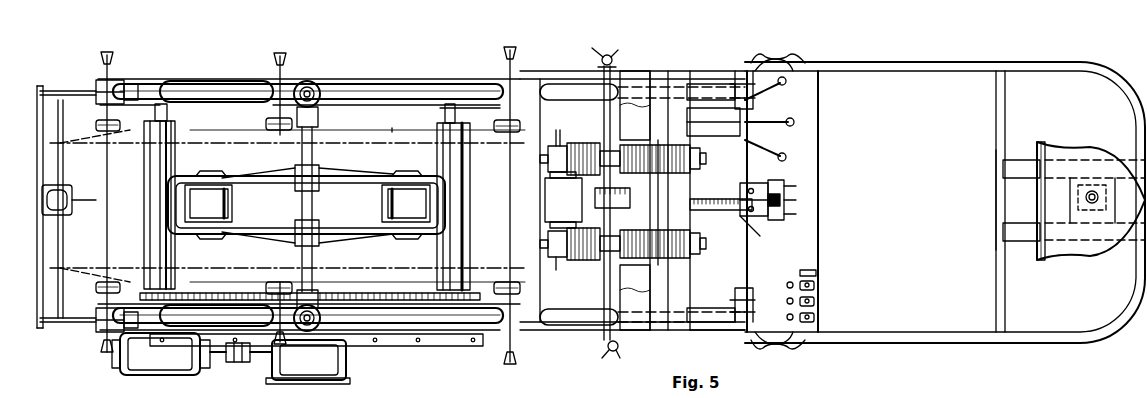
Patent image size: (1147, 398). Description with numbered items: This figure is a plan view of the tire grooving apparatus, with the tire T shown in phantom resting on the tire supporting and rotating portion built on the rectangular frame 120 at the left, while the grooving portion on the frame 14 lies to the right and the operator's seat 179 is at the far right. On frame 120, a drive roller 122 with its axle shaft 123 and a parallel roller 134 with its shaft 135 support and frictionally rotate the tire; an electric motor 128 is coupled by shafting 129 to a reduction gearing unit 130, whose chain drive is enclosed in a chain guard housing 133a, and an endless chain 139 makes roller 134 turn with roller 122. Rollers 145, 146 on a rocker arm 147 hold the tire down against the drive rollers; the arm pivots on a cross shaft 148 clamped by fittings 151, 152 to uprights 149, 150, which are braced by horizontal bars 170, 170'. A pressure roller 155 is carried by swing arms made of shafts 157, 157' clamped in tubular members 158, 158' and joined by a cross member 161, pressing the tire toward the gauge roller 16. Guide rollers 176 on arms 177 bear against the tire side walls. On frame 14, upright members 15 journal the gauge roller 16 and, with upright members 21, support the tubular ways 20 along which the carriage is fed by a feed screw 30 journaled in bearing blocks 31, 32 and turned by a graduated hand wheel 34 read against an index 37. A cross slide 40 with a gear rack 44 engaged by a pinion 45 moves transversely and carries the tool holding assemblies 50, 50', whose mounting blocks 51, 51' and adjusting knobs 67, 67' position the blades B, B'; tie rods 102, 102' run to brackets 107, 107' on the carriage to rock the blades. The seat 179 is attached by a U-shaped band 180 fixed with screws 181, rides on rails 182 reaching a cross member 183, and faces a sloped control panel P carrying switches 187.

The frame 14 is at (712, 332).
The upright members 15 is at (576, 84).
The gauge roller 16 is at (563, 200).
The carriage supporting tubular ways 20 is at (705, 84).
The upright members 21 is at (744, 72).
The carriage feed screw 30 is at (700, 212).
The bearing block 31 is at (610, 192).
The bearing block 32 is at (742, 186).
The graduated hand wheel 34 is at (778, 198).
The pointer or index 37 is at (758, 228).
The cross slide 40 is at (670, 200).
The gear rack 44 is at (686, 80).
The pinion 45 is at (688, 124).
The tire grooving tool holding assembly 50 is at (593, 260).
The tire grooving tool holding assembly 50' is at (593, 147).
The mounting block 51 is at (655, 231).
The mounting block 51' is at (655, 142).
The adjusting knob 67 is at (706, 246).
The adjusting knob 67' is at (707, 160).
The tie rod 102 is at (633, 297).
The tie rod 102' is at (634, 105).
The bracket 107 is at (631, 357).
The bracket 107' is at (629, 184).
The rectangular frame 120 is at (366, 68).
The drive roller 122 is at (442, 162).
The axle shaft 123 is at (446, 112).
The electric motor 128 is at (138, 376).
The shafting 129 is at (215, 356).
The reduction gearing unit 130 is at (346, 358).
The chain guard housing 133a is at (448, 344).
The roller 134 is at (175, 146).
The shaft 135 is at (168, 114).
The endless chain 139 is at (392, 296).
The roller 145 is at (232, 205).
The roller 146 is at (382, 205).
The rocker arm 147 is at (350, 178).
The cross shaft 148 is at (314, 155).
The upright member 149 is at (312, 82).
The upright member 150 is at (320, 304).
The fitting 151 is at (320, 116).
The fitting 152 is at (318, 296).
The pressure roller 155 is at (78, 198).
The shaft 157 is at (89, 331).
The shaft 157' is at (89, 78).
The tubular member 158 is at (216, 286).
The tubular member 158' is at (216, 75).
The cross member 161 is at (42, 112).
The horizontal bar 170 is at (308, 339).
The horizontal bar 170' is at (308, 70).
The guide rollers 176 is at (118, 130).
The arm 177 is at (108, 66).
The seat 179 is at (1080, 144).
The U-shaped band 180 is at (898, 72).
The screws 181 is at (776, 58).
The seat supporting rails 182 is at (1016, 160).
The cross member 183 is at (996, 278).
The switches 187 is at (816, 318).
The blade B is at (552, 262).
The blade B' is at (553, 149).
The control panel P is at (827, 277).
The tire carcass T is at (392, 126).